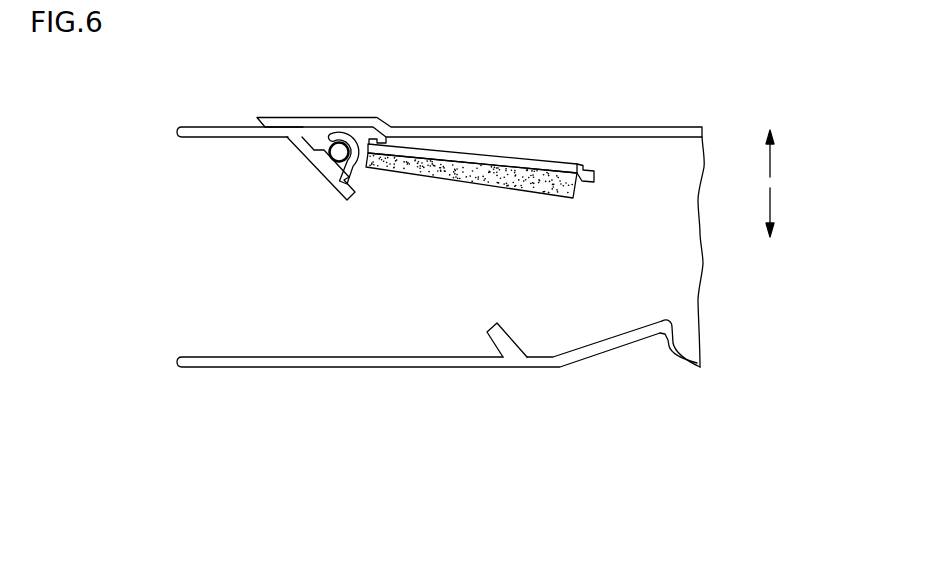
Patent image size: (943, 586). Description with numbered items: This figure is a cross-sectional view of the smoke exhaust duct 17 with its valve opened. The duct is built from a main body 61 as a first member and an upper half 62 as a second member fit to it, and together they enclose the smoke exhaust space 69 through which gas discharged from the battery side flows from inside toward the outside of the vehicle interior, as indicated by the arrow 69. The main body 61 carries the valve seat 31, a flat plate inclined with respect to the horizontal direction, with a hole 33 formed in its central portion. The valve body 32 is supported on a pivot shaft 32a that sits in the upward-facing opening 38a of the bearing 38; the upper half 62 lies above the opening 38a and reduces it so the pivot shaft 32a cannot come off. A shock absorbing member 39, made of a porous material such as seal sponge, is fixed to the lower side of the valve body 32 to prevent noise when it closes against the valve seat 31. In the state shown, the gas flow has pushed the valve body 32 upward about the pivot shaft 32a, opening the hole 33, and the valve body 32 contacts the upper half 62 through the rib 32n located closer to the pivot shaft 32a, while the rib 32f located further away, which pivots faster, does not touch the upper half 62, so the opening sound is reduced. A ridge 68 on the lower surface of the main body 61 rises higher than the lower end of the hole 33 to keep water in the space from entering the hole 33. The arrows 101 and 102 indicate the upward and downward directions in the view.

The smoke exhaust duct 17 is at (158, 136).
The valve seat 31 is at (503, 328).
The valve body 32 is at (453, 152).
The pivot shaft 32a is at (336, 157).
The rib 32f is at (584, 166).
The rib 32n is at (392, 133).
The hole 33 is at (357, 202).
The bearing 38 is at (350, 138).
The opening 38a is at (321, 134).
The shock absorbing member 39 is at (512, 171).
The main body 61 is at (384, 366).
The upper half 62 is at (578, 126).
The ridge 68 is at (667, 326).
The smoke exhaust space 69 is at (669, 198).
The upward direction 101 is at (772, 161).
The downward direction 102 is at (772, 208).